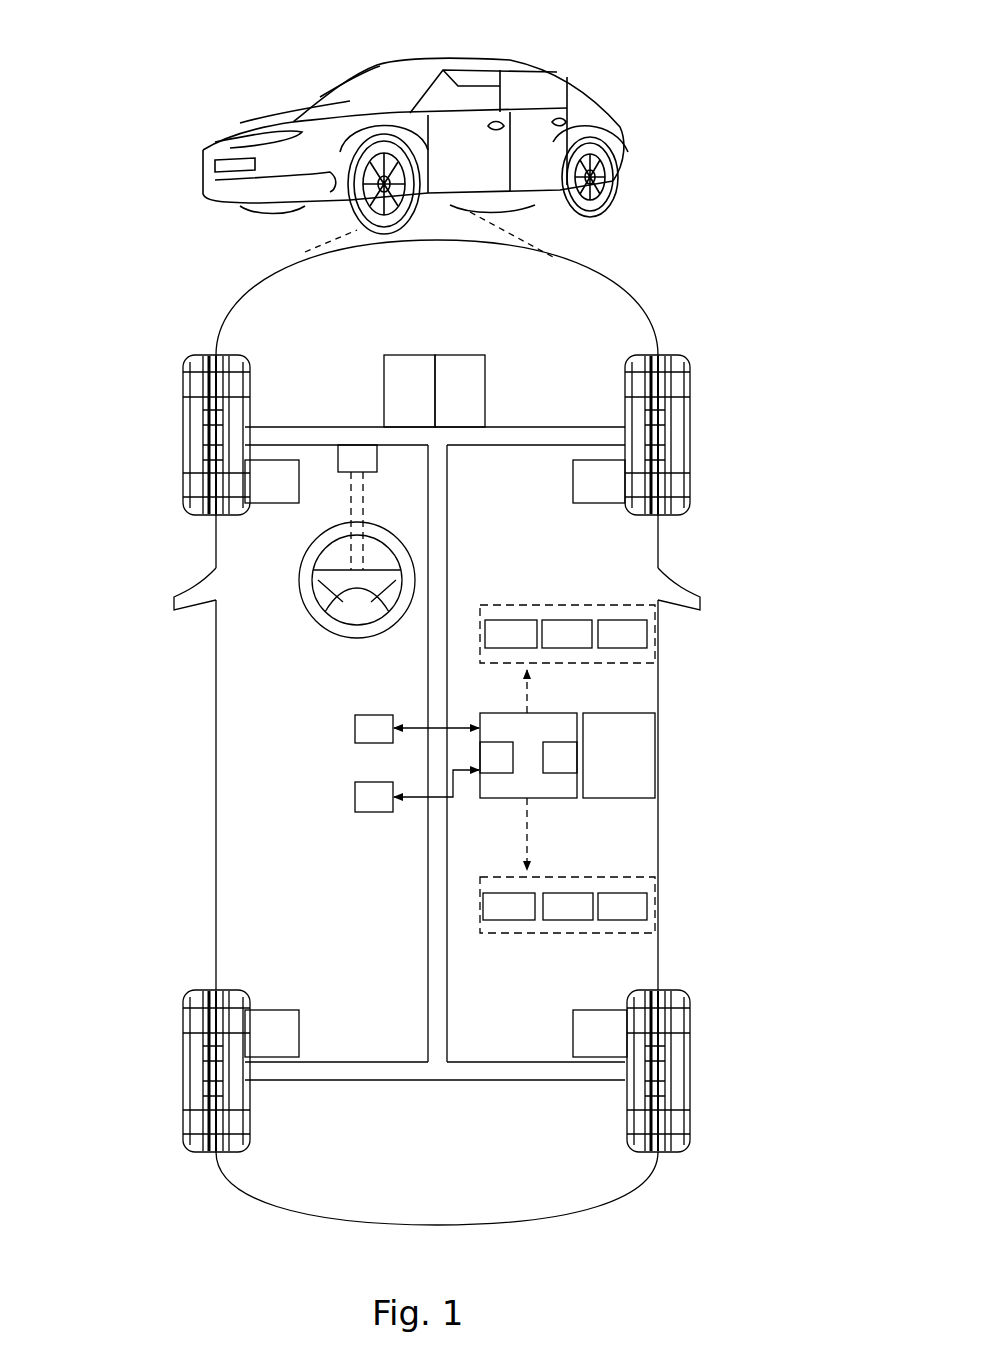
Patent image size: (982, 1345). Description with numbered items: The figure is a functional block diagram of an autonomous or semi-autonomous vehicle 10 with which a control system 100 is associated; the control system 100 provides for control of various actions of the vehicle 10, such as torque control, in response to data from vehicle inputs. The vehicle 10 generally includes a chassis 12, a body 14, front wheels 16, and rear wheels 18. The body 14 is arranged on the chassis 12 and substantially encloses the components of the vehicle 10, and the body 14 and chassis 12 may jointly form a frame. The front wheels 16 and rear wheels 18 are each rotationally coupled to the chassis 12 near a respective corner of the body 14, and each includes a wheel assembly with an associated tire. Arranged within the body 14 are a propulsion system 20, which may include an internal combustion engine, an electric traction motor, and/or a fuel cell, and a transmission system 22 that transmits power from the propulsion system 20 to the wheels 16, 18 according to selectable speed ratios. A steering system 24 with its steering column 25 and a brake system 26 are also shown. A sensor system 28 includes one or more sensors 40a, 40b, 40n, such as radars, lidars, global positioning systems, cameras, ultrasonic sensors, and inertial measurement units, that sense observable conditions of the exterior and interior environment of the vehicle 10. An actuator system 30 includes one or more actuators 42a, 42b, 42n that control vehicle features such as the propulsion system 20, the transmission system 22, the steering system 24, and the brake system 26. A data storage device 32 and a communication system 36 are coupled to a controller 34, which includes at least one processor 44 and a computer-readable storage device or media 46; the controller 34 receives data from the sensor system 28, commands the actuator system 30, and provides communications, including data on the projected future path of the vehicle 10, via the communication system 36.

The vehicle 10 is at (232, 182).
The chassis 12 is at (440, 1082).
The body 14 is at (216, 657).
The front wheels 16 is at (183, 420).
The rear wheels 18 is at (183, 1062).
The propulsion system 20 is at (386, 392).
The transmission system 22 is at (468, 389).
The steering system 24 is at (308, 628).
The steering column 25 is at (356, 638).
The brake system 26 is at (284, 491).
The sensor system 28 is at (520, 604).
The actuator system 30 is at (606, 878).
The data storage device 32 is at (358, 730).
The controller 34 is at (494, 726).
The communication system 36 is at (612, 716).
The sensor 40a is at (498, 626).
The sensor 40b is at (558, 636).
The sensor 40n is at (644, 634).
The actuator 42a is at (504, 896).
The actuator 42b is at (582, 896).
The actuator 42n is at (644, 906).
The processor 44 is at (506, 775).
The computer-readable storage device or media 46 is at (552, 746).
The control system 100 is at (358, 794).